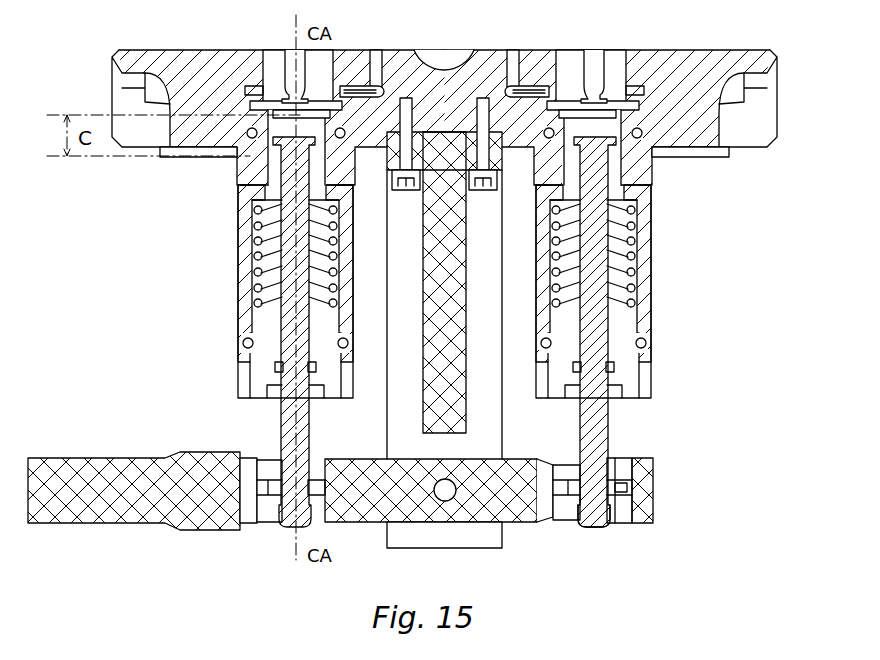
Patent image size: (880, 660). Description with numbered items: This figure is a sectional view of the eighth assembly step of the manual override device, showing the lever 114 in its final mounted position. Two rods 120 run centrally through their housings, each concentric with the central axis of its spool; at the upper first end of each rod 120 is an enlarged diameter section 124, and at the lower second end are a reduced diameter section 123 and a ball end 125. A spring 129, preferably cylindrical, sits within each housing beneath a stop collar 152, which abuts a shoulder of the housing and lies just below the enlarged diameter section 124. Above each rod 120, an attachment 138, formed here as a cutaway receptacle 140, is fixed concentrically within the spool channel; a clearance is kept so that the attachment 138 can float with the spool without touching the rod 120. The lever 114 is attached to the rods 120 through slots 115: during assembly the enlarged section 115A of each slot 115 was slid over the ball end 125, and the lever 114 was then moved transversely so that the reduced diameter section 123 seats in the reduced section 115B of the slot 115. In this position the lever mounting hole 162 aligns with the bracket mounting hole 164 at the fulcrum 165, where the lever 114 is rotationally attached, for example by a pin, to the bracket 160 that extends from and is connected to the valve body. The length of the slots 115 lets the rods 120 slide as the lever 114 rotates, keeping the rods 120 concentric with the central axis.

The lever 114 is at (148, 508).
The slots 115 is at (268, 468).
The enlarged section 115A is at (249, 506).
The reduced section 115B is at (620, 468).
The rod 120 is at (613, 408).
The reduced diameter section 123 is at (632, 490).
The enlarged diameter section 124 is at (705, 162).
The ball end 125 is at (606, 527).
The spring 129 is at (628, 305).
The attachment 138 is at (641, 54).
The cutaway receptacle 140 is at (585, 75).
The stop collar 152 is at (652, 193).
The bracket 160 is at (473, 297).
The lever mounting hole 162 is at (439, 522).
The bracket mounting hole 164 is at (447, 502).
The fulcrum 165 is at (436, 500).